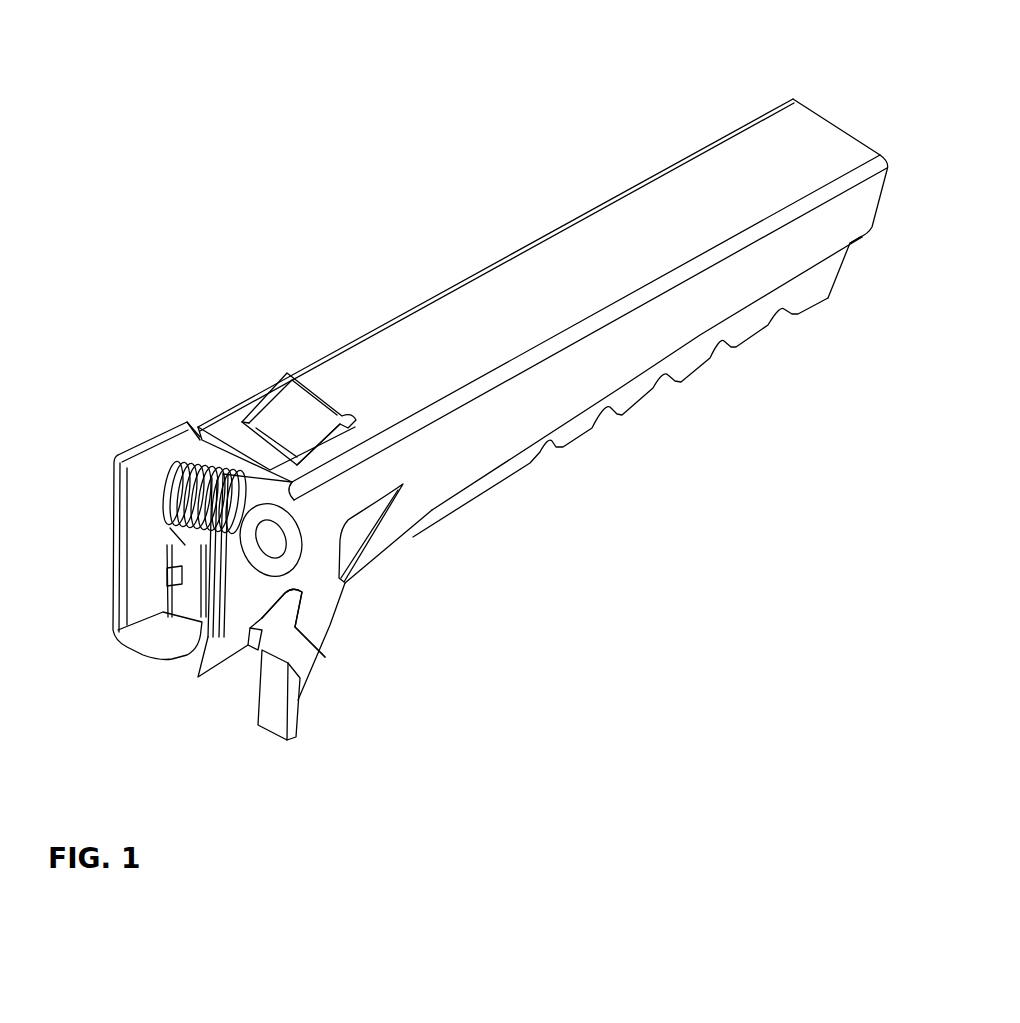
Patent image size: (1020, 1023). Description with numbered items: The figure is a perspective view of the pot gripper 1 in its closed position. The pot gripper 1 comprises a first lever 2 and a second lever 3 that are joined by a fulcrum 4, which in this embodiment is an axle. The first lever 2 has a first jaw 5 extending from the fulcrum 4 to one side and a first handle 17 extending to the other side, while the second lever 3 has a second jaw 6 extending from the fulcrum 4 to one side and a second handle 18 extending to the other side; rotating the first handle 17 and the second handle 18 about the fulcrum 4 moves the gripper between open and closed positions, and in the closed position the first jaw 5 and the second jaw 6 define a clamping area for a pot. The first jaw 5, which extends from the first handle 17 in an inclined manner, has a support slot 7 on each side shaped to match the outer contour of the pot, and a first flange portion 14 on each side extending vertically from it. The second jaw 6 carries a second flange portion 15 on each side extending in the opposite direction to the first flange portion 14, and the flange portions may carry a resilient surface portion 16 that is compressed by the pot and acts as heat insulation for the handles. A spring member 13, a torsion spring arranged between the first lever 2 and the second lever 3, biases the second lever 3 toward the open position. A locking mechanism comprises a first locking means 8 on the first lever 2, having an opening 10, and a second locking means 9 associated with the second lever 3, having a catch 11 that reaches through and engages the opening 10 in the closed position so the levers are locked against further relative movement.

The pot gripper 1 is at (337, 152).
The first lever 2 is at (592, 244).
The second lever 3 is at (810, 285).
The fulcrum 4 is at (275, 541).
The first jaw 5 is at (329, 612).
The second jaw 6 is at (140, 611).
The support slot 7 is at (277, 615).
The first locking means 8 is at (201, 436).
The second locking means 9 is at (312, 407).
The opening 10 is at (265, 394).
The catch 11 is at (337, 393).
The spring member 13 is at (178, 478).
The first flange portion 14 is at (147, 647).
The second flange portion 15 is at (192, 613).
The resilient surface portion 16 is at (273, 710).
The first handle 17 is at (694, 195).
The second handle 18 is at (688, 360).